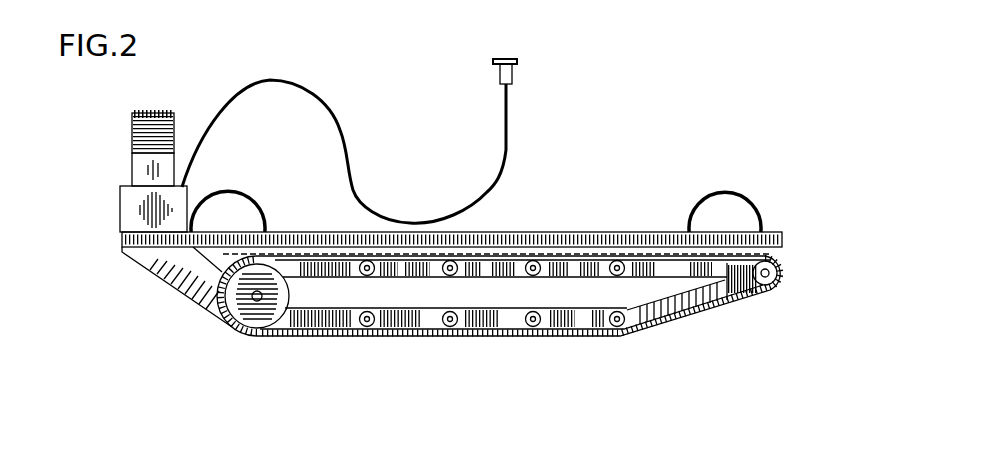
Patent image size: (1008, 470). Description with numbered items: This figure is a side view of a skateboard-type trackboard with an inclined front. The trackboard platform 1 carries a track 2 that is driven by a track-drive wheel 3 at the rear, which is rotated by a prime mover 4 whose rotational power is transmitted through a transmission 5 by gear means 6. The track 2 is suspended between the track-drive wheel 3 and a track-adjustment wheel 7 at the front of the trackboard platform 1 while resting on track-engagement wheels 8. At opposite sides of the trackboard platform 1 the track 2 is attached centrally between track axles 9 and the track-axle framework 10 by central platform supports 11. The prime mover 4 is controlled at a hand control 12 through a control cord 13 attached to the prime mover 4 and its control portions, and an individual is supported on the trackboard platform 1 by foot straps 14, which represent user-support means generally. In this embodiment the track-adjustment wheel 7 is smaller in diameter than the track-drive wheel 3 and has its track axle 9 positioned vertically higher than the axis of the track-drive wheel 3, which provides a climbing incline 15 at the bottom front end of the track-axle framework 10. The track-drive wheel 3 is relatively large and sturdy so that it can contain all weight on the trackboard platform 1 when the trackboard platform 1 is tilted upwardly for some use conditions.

The trackboard platform 1 is at (561, 246).
The track 2 is at (477, 337).
The track-drive wheel 3 is at (268, 318).
The prime mover 4 is at (133, 135).
The transmission 5 is at (135, 212).
The gear means 6 is at (182, 289).
The track-adjustment wheel 7 is at (778, 273).
The track-engagement wheels 8 is at (444, 273).
The track axles 9 is at (258, 299).
The track-axle framework 10 is at (410, 273).
The central platform supports 11 is at (142, 254).
The hand control 12 is at (493, 62).
The control cord 13 is at (307, 90).
The foot straps 14 is at (250, 192).
The climbing incline 15 is at (697, 313).